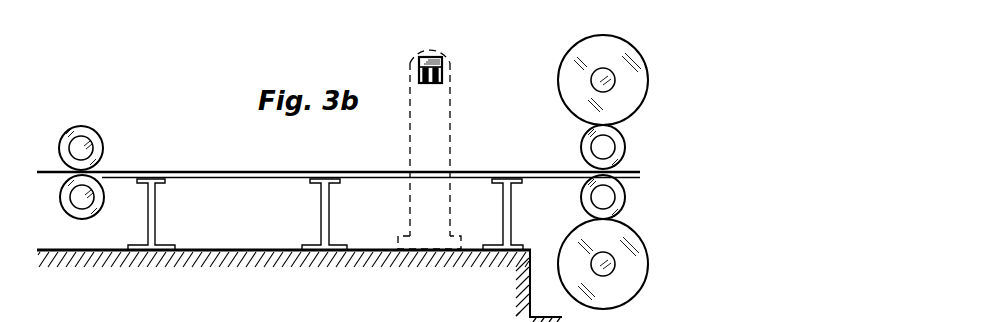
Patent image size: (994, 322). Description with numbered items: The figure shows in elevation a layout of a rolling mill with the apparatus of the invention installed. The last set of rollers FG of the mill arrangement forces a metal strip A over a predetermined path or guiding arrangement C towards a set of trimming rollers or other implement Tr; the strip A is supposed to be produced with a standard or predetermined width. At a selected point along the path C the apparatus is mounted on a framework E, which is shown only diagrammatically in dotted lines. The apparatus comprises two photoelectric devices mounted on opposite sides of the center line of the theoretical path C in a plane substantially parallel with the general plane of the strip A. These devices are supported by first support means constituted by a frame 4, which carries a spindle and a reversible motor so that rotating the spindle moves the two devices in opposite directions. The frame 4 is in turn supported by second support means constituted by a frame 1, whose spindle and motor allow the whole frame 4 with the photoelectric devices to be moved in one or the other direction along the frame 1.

The metal strip A is at (48, 170).
The trimming rollers Tr is at (95, 143).
The predetermined path or guiding arrangement C is at (226, 166).
The frame 1 is at (430, 57).
The frame 4 is at (445, 67).
The framework E is at (442, 143).
The last set of rollers FG is at (567, 88).